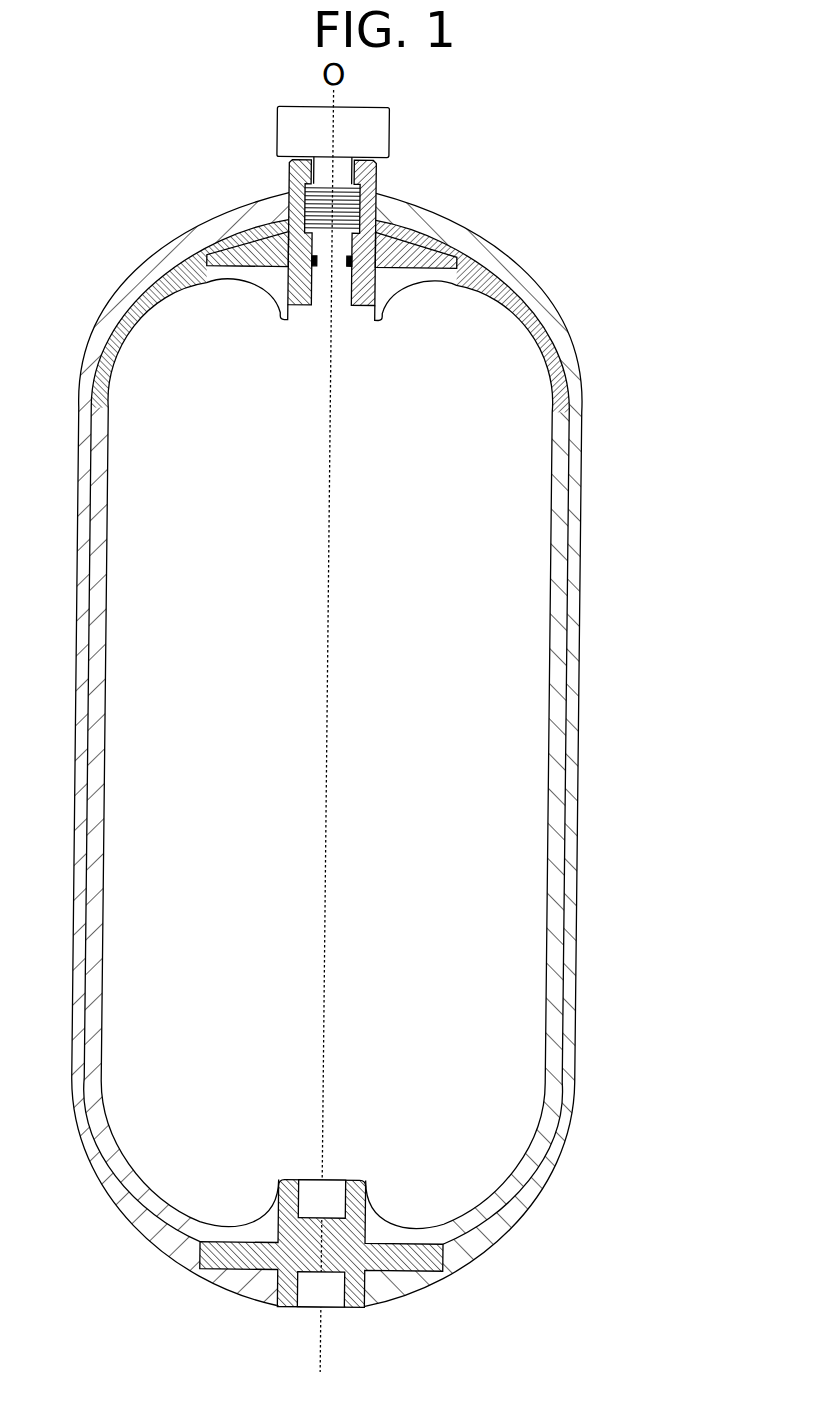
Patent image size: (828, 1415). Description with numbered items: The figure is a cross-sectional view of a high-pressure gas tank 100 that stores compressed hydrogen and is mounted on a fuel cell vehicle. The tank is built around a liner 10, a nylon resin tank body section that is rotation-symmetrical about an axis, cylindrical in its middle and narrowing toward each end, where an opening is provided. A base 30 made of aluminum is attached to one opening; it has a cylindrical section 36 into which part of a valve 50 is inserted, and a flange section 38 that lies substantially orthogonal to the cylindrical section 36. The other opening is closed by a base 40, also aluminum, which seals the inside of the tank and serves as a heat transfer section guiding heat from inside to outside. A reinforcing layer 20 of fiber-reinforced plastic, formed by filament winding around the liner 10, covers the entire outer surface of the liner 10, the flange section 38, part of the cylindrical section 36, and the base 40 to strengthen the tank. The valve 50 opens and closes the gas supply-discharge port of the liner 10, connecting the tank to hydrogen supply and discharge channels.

The high-pressure gas tank 100 is at (558, 214).
The liner 10 is at (557, 686).
The reinforcing layer 20 is at (573, 722).
The base 30 is at (401, 225).
The cylindrical section 36 is at (285, 187).
The flange section 38 is at (237, 238).
The base 40 is at (323, 1329).
The valve 50 is at (284, 128).